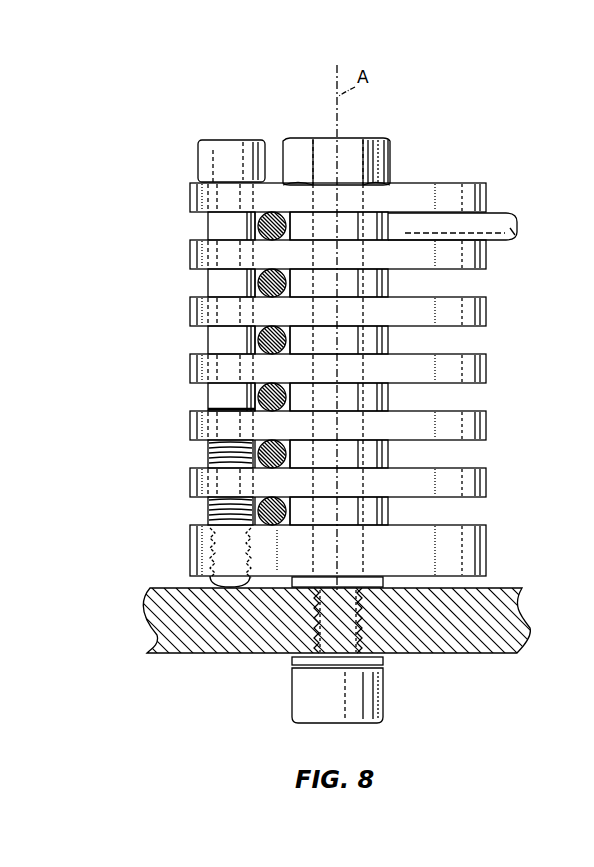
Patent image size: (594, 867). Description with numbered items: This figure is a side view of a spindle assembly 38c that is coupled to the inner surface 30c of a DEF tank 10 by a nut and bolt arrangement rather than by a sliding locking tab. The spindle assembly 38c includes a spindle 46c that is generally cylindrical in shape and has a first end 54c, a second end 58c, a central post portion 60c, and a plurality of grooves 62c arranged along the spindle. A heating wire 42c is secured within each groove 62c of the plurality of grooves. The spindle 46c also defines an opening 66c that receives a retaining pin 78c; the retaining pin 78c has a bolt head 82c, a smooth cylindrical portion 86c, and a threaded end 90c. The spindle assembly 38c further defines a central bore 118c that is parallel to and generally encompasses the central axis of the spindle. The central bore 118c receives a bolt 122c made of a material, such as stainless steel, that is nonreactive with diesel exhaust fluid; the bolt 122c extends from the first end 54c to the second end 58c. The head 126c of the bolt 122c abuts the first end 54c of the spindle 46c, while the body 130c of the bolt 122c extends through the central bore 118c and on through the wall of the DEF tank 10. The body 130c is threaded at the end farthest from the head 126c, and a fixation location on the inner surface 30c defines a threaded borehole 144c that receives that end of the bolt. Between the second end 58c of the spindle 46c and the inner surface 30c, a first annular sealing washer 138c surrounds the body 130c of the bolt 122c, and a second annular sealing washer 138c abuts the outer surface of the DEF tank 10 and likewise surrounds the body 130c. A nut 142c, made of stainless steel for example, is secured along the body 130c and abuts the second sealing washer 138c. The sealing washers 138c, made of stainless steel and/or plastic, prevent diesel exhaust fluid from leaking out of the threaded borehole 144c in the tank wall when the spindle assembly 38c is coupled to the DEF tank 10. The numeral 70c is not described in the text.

The DEF tank 10 is at (118, 628).
The inner surface 30c is at (159, 582).
The spindle assembly 38c is at (521, 160).
The heating wire 42c is at (520, 230).
The spindle 46c is at (487, 312).
The first end 54c is at (468, 183).
The second end 58c is at (481, 576).
The central post portion 60c is at (388, 339).
The grooves 62c is at (208, 296).
The opening 66c is at (215, 180).
The threaded hole 70c is at (208, 545).
The retaining pin 78c is at (204, 128).
The bolt head 82c is at (242, 139).
The smooth cylindrical portion 86c is at (208, 222).
The threaded end 90c is at (218, 586).
The central bore 118c is at (322, 137).
The bolt 122c is at (371, 360).
The head 126c is at (358, 139).
The body 130c is at (367, 200).
The annular sealing washer 138c is at (392, 578).
The nut 142c is at (292, 688).
The threaded borehole 144c is at (290, 622).